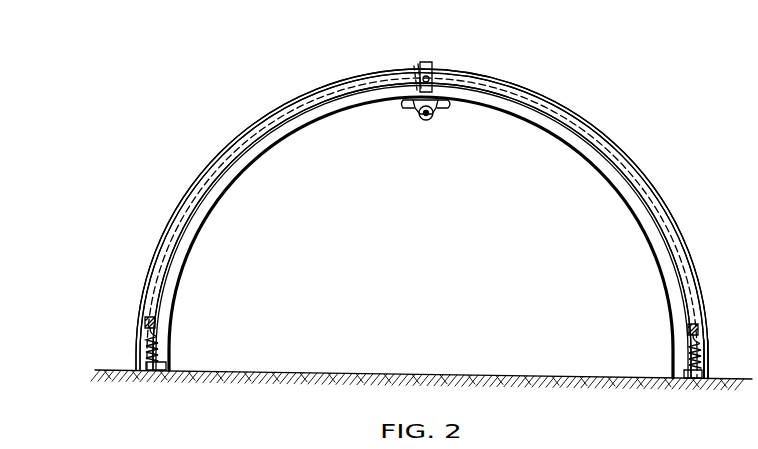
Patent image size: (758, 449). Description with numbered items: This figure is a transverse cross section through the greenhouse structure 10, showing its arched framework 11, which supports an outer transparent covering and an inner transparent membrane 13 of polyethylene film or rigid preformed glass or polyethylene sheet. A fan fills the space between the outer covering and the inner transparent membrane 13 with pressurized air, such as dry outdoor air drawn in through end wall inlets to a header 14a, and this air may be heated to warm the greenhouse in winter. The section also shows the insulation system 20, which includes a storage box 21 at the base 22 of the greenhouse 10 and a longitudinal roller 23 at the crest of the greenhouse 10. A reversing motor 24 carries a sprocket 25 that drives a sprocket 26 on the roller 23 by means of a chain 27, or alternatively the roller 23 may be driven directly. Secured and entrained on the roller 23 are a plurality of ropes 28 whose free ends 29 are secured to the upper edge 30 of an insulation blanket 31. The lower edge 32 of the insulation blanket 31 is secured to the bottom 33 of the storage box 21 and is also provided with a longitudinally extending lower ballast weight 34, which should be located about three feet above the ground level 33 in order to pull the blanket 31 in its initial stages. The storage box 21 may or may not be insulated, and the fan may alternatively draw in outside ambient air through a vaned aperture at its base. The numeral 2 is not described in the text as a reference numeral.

The outer cover sheet 2 is at (153, 270).
The greenhouse structure 10 is at (607, 138).
The arched framework 11 is at (195, 240).
The inner transparent membrane 13 is at (206, 206).
The header 14a is at (447, 106).
The insulation system 20 is at (258, 128).
The storage box 21 is at (710, 362).
The base 22 is at (264, 396).
The longitudinal roller 23 is at (430, 78).
The reversing motor 24 is at (420, 122).
The sprocket 25 is at (437, 121).
The sprocket 26 is at (420, 68).
The chain 27 is at (404, 106).
The ropes 28 is at (323, 95).
The free ends 29 is at (257, 150).
The upper edge 30 is at (236, 149).
The insulation blanket 31 is at (186, 212).
The lower edge 32 is at (165, 366).
The bottom 33 is at (162, 372).
The lower ballast weight 34 is at (144, 325).